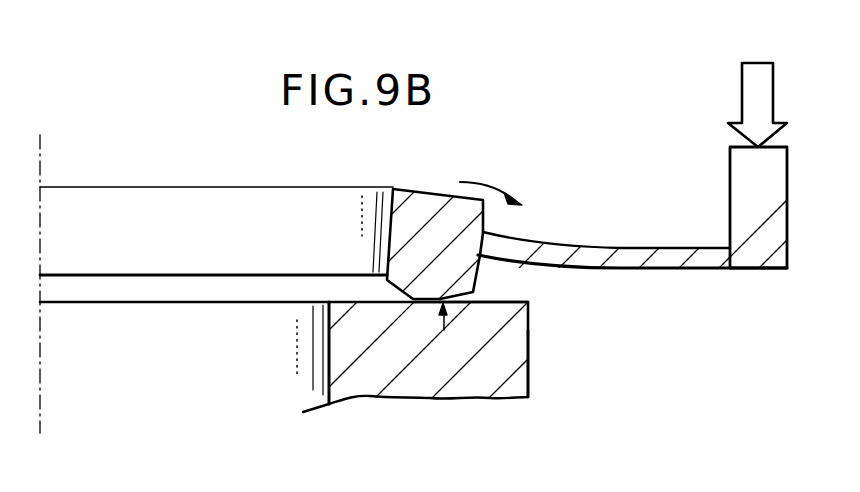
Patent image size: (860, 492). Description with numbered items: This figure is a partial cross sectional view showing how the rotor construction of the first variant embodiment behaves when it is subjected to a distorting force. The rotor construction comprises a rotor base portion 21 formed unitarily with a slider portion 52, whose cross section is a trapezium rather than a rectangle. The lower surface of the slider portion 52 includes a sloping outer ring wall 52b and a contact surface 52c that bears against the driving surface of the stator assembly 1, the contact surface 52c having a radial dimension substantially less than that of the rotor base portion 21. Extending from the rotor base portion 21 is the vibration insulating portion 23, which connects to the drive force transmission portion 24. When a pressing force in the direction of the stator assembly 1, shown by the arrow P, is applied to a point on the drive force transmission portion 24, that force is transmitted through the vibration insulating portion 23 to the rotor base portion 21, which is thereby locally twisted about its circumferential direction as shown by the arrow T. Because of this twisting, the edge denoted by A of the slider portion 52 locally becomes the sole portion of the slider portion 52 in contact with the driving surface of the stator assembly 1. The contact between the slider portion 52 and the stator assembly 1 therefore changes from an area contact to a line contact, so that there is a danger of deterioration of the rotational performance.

The rotor base portion 21 is at (437, 190).
The vibration insulating portion 23 is at (706, 260).
The drive force transmission portion 24 is at (733, 177).
The slider portion 52 is at (400, 292).
The sloping outer ring wall 52b is at (468, 303).
The contact surface 52c is at (427, 303).
The stator assembly 1 is at (520, 378).
The edge of the slider portion A is at (445, 328).
The arrow indicating local twisting T is at (501, 203).
The arrow indicating pressing force P is at (757, 84).